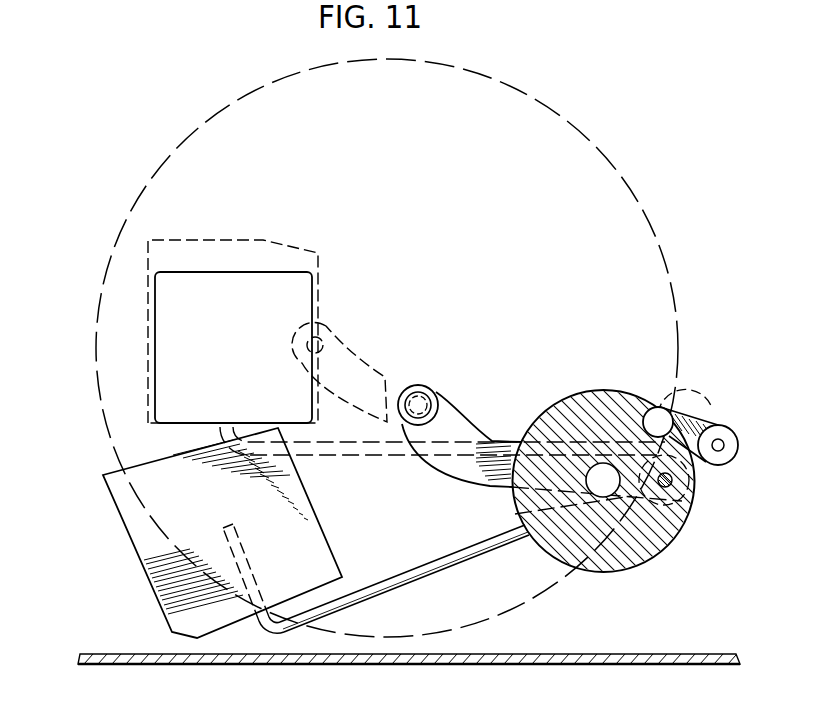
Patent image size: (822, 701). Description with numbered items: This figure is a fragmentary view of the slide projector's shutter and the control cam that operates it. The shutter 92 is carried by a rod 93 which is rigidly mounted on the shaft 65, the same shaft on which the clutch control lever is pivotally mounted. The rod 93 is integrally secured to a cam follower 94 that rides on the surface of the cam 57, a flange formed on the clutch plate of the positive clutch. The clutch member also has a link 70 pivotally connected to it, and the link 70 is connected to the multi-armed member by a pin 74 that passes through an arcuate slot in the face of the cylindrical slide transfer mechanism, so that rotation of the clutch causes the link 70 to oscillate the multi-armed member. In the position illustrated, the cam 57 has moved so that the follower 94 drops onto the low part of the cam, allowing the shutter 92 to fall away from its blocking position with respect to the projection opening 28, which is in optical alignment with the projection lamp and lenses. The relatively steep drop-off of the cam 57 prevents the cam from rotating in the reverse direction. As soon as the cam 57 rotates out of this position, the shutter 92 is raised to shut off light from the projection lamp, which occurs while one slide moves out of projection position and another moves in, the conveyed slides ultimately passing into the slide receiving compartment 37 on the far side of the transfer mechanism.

The transverse opening 28 is at (208, 272).
The slide receiving compartment 37 is at (614, 490).
The flange 57 is at (590, 390).
The shaft 65 is at (720, 445).
The link 70 is at (468, 428).
The pin 74 is at (420, 404).
The shutter 92 is at (195, 502).
The rod 93 is at (437, 568).
The cam follower 94 is at (686, 425).